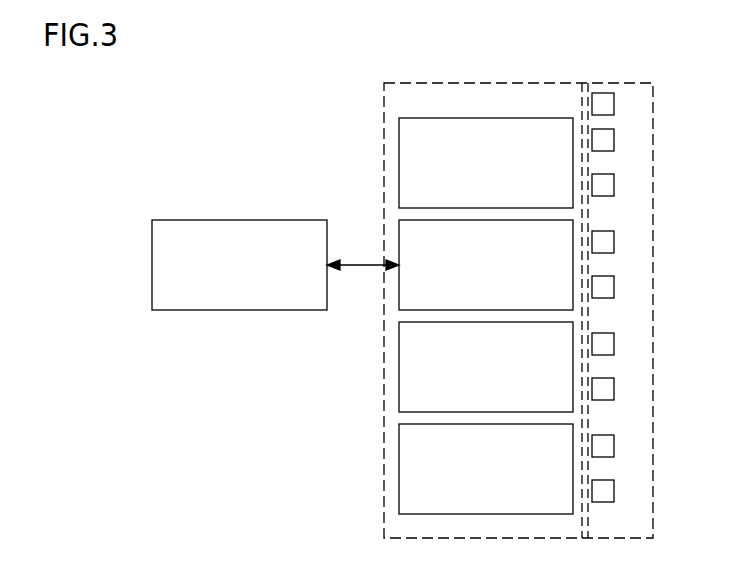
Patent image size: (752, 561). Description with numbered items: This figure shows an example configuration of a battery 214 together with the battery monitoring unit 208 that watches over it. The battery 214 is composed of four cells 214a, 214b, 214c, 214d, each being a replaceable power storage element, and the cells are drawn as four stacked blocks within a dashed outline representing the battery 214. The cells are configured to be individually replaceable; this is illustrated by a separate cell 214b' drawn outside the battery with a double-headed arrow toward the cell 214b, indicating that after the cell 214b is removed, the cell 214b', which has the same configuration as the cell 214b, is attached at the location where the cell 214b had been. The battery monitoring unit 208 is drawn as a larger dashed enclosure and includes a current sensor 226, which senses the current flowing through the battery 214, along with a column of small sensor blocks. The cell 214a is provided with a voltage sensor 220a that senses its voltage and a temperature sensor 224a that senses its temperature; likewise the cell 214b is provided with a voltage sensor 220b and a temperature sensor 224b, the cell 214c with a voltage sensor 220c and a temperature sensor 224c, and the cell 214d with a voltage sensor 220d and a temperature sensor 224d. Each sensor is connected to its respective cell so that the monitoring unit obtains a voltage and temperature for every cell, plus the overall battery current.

The battery monitoring unit 208 is at (653, 196).
The battery 214 is at (505, 83).
The cell 214a is at (399, 165).
The cell 214b is at (486, 241).
The cell 214b' is at (240, 249).
The cell 214c is at (399, 370).
The cell 214d is at (399, 472).
The current sensor 226 is at (604, 93).
The voltage sensor 220a is at (592, 140).
The temperature sensor 224a is at (592, 185).
The voltage sensor 220b is at (592, 242).
The temperature sensor 224b is at (592, 287).
The voltage sensor 220c is at (592, 344).
The temperature sensor 224c is at (592, 389).
The voltage sensor 220d is at (592, 446).
The temperature sensor 224d is at (592, 491).